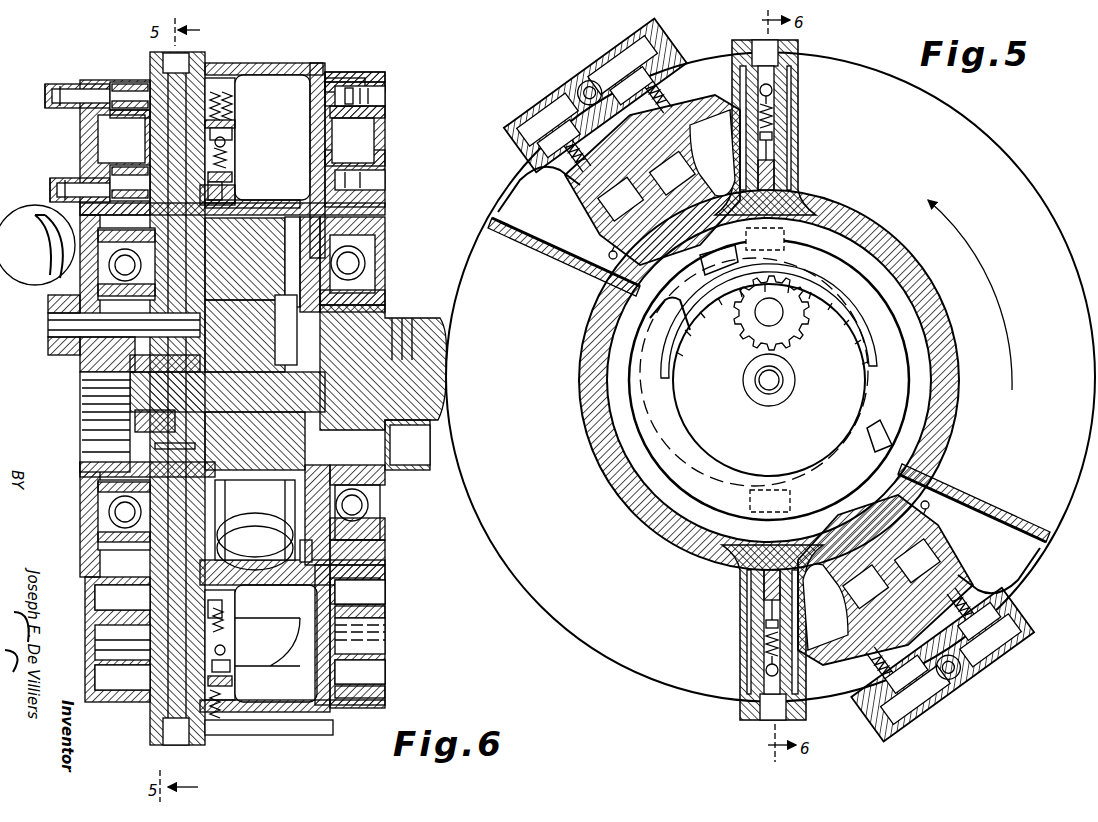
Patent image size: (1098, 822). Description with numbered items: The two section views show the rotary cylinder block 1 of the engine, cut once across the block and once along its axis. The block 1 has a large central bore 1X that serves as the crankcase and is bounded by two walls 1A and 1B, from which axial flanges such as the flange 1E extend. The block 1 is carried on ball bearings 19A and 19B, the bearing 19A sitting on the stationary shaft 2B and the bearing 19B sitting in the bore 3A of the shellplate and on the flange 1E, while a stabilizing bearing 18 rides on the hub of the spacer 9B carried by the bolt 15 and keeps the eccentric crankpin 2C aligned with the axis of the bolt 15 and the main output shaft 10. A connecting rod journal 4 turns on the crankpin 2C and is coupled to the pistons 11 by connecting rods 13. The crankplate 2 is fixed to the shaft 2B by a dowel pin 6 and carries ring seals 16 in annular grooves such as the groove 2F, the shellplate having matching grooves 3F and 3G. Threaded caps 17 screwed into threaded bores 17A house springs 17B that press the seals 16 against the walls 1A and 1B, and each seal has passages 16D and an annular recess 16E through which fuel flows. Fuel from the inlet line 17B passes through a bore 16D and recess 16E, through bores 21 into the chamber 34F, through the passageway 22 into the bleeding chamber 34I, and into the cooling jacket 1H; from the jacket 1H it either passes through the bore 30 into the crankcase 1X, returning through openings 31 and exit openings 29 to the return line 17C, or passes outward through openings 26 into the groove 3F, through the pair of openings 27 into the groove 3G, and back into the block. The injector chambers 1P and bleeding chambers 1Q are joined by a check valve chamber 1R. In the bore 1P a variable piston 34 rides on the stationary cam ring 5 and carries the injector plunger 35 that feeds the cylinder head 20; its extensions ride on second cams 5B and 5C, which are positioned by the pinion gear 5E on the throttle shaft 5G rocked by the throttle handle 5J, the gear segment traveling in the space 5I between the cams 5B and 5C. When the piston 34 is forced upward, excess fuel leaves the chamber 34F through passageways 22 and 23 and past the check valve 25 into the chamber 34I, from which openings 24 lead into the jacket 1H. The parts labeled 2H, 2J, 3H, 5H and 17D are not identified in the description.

In FIG. 5, the rotary cylinder block 1 is at (985, 146).
In FIG. 6, the central bore 1X is at (308, 490).
In FIG. 5, the central bore 1X is at (940, 262).
In FIG. 6, the injector chamber 1P is at (145, 113).
In FIG. 5, the injector chamber 1P is at (792, 130).
In FIG. 5, the check valve chamber 1R is at (718, 140).
In FIG. 6, the wall 1A is at (140, 130).
In FIG. 6, the wall 1B is at (315, 252).
In FIG. 6, the flange 1E is at (378, 290).
In FIG. 6, the jacket 1H is at (300, 135).
In FIG. 6, the bleeding chamber 1Q is at (232, 100).
In FIG. 6, the crankplate 2 is at (140, 420).
In FIG. 6, the stationary shaft 2B is at (100, 482).
In FIG. 6, the eccentric crankpin 2C is at (226, 329).
In FIG. 6, the annular groove 2F is at (175, 370).
In FIG. 6, the rotor passage 2H is at (100, 630).
In FIG. 6, the rotor portion 2J is at (247, 345).
In FIG. 6, the bore 3A is at (380, 522).
In FIG. 6, the annular groove 3F is at (368, 78).
In FIG. 6, the inner groove 3G is at (380, 184).
In FIG. 6, the housing passage 3H is at (385, 632).
In FIG. 6, the connecting rod journal 4 is at (262, 230).
In FIG. 6, the cam ring 5 is at (208, 258).
In FIG. 6, the second cam 5B is at (160, 300).
In FIG. 6, the second cam 5C is at (234, 504).
In FIG. 6, the pinion gear 5E is at (228, 350).
In FIG. 6, the throttle shaft 5G is at (124, 320).
In FIG. 6, the plate flange 5H is at (68, 352).
In FIG. 6, the space 5I is at (245, 329).
In FIG. 6, the throttle handle 5J is at (36, 252).
In FIG. 6, the dowel pin 6 is at (156, 448).
In FIG. 6, the spacer flange 9B is at (275, 298).
In FIG. 6, the main output shaft 10 is at (428, 318).
In FIG. 5, the piston 11 is at (542, 236).
In FIG. 6, the connecting rod 13 is at (252, 534).
In FIG. 6, the bolt 15 is at (128, 404).
In FIG. 5, the bolt 15 is at (772, 382).
In FIG. 6, the ring seal 16 is at (118, 84).
In FIG. 6, the passage 16D is at (105, 113).
In FIG. 6, the annular recess 16E is at (128, 202).
In FIG. 6, the threaded cap 17 is at (380, 112).
In FIG. 6, the threaded bore 17A is at (380, 92).
In FIG. 6, the spring 17B is at (108, 658).
In FIG. 6, the fuel return line 17C is at (52, 190).
In FIG. 6, the fitting 17D is at (64, 88).
In FIG. 6, the stabilizing bearing 18 is at (392, 435).
In FIG. 6, the ball bearing 19A is at (110, 513).
In FIG. 6, the ball bearing 19B is at (370, 262).
In FIG. 5, the cylinder head 20 is at (568, 86).
In FIG. 6, the bore 21 is at (150, 82).
In FIG. 6, the passageway 22 is at (222, 618).
In FIG. 6, the passageway 23 is at (205, 70).
In FIG. 6, the opening 24 is at (228, 146).
In FIG. 6, the check valve 25 is at (228, 136).
In FIG. 6, the opening 26 is at (330, 100).
In FIG. 6, the opening 27 is at (355, 139).
In FIG. 5, the exit opening 29 is at (612, 252).
In FIG. 6, the bore 30 is at (292, 255).
In FIG. 5, the opening 31 is at (606, 284).
In FIG. 6, the variable piston 34 is at (224, 552).
In FIG. 5, the variable piston 34 is at (794, 156).
In FIG. 6, the chamber 34F is at (225, 118).
In FIG. 6, the bleeding chamber 34I is at (232, 160).
In FIG. 6, the injector plunger 35 is at (225, 200).